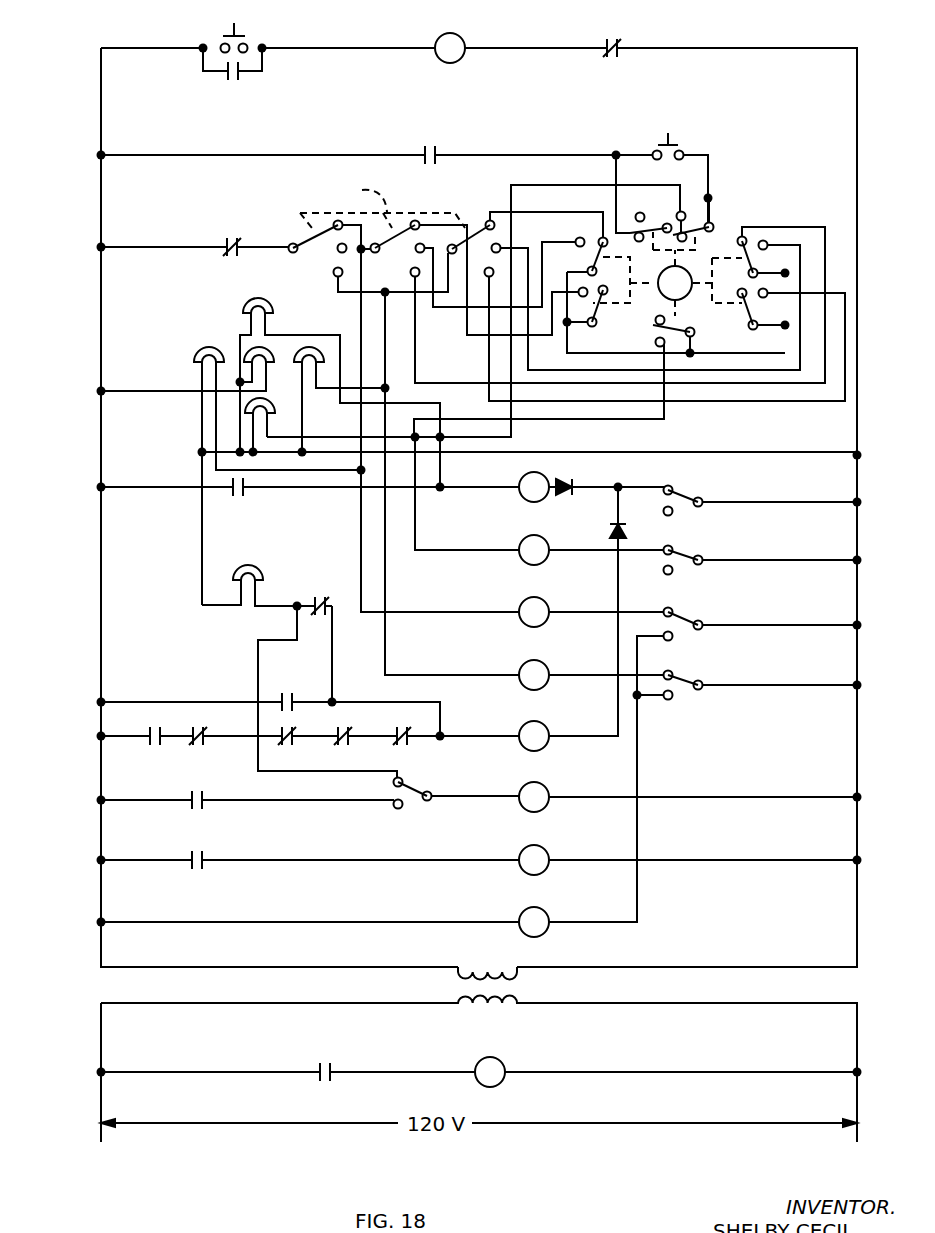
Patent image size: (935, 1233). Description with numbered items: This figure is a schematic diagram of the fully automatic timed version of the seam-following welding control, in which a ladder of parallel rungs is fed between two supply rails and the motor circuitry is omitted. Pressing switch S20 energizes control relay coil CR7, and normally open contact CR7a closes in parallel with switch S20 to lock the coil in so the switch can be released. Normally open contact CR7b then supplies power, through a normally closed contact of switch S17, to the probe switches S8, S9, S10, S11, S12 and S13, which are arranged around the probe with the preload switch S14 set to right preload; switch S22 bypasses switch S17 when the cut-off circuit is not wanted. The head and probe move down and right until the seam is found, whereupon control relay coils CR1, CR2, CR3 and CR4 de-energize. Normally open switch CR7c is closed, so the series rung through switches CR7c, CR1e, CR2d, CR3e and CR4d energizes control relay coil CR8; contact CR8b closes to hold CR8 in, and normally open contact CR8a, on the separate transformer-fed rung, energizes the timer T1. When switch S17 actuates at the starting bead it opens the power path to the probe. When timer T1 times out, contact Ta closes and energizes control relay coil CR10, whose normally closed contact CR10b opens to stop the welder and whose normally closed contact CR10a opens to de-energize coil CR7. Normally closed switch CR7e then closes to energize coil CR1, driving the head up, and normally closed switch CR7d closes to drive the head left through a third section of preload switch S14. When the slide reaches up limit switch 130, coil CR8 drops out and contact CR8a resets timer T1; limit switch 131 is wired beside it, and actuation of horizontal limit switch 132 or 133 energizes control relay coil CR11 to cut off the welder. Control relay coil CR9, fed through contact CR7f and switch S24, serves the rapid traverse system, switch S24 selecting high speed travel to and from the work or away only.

The start switch S20 is at (237, 27).
The control relay coil CR7 is at (464, 37).
The normally closed contact CR10a is at (622, 37).
The normally open contact CR7a is at (227, 78).
The normally open contact CR7b is at (440, 149).
The bypass switch S22 is at (675, 125).
The probe cut-off switch S17 is at (640, 232).
The normal up switch S8 is at (678, 238).
The probe switch S10 is at (752, 256).
The probe switch S11 is at (768, 311).
The preload switch S14 is at (395, 228).
The probe switch S12 is at (594, 262).
The probe switch S13 is at (598, 295).
The probe switch S9 is at (664, 338).
The normally closed switch CR7d is at (225, 240).
The up limit switch 130 is at (686, 496).
The limit switch 131 is at (686, 558).
The horizontal limit switch 132 is at (686, 618).
The horizontal limit switch 133 is at (686, 682).
The control relay coil CR1 is at (522, 498).
The control relay coil CR2 is at (522, 560).
The control relay coil CR3 is at (522, 622).
The control relay coil CR4 is at (522, 685).
The control relay coil CR8 is at (518, 747).
The control relay coil CR9 is at (518, 807).
The control relay coil CR10 is at (520, 870).
The control relay coil CR11 is at (518, 932).
The normally closed switch CR7e is at (242, 497).
The normally closed contact CR10b is at (310, 610).
The normally open contact CR8b is at (284, 697).
The relay contact CR2d is at (283, 732).
The normally open switch CR7c is at (150, 740).
The relay contact CR1e is at (200, 742).
The relay contact CR3e is at (347, 742).
The relay contact CR4d is at (400, 742).
The relay contact CR7f is at (187, 808).
The rapid traverse selector switch S24 is at (390, 802).
The timer contact Ta is at (190, 868).
The normally open contact CR8a is at (357, 1047).
The timer T1 is at (502, 1058).